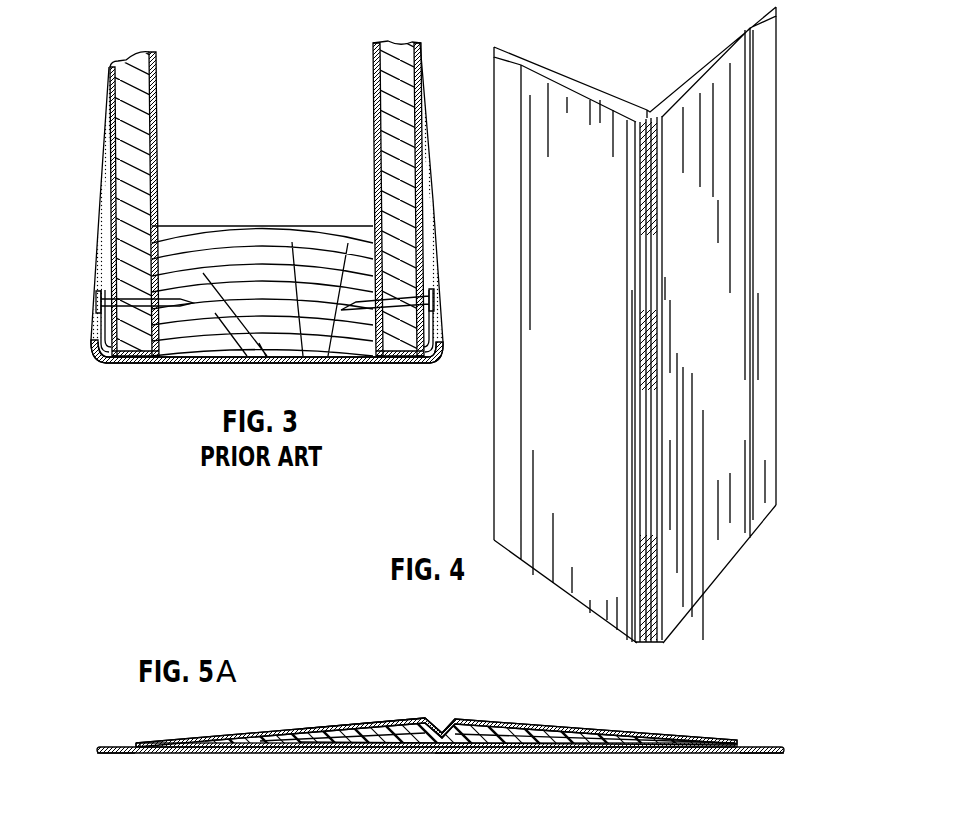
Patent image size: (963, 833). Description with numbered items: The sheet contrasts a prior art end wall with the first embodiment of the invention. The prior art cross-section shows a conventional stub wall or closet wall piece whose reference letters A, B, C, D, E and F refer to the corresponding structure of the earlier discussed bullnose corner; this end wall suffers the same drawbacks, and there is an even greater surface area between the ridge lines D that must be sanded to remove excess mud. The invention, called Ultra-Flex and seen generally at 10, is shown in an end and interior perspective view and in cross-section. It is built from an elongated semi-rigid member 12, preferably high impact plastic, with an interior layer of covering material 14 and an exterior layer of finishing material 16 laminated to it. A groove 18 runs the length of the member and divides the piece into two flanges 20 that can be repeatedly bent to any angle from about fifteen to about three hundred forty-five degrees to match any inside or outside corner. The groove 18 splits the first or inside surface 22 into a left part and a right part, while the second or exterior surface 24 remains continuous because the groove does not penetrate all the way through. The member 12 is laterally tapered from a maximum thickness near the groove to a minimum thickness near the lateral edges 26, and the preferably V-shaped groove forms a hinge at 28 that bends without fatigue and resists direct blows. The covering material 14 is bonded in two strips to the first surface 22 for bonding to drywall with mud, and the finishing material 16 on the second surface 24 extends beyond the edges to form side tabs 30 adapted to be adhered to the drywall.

In FIG. 3, the prior art structure A is at (122, 77).
In FIG. 3, the prior art structure B is at (403, 73).
In FIG. 3, the prior art structure C is at (208, 366).
In FIG. 3, the ridge lines D is at (88, 344).
In FIG. 3, the prior art structure E is at (97, 273).
In FIG. 3, the prior art structure F is at (102, 227).
In FIG. 4, the Ultra-Flex corner trim piece 10 is at (615, 341).
In FIG. 4, the elongated semi-rigid member 12 is at (678, 91).
In FIG. 5A, the elongated semi-rigid member 12 is at (508, 749).
In FIG. 4, the covering material 14 is at (584, 304).
In FIG. 5A, the covering material 14 is at (262, 736).
In FIG. 4, the finishing material 16 is at (580, 82).
In FIG. 5A, the finishing material 16 is at (314, 753).
In FIG. 4, the groove 18 is at (648, 645).
In FIG. 5A, the groove 18 is at (441, 730).
In FIG. 4, the flanges 20 is at (563, 584).
In FIG. 5A, the first or inside surface 22 is at (348, 720).
In FIG. 5A, the second or exterior surface 24 is at (388, 750).
In FIG. 5A, the lateral edges 26 is at (128, 754).
In FIG. 5A, the hinge 28 is at (449, 754).
In FIG. 4, the side tabs 30 is at (492, 510).
In FIG. 5A, the side tabs 30 is at (132, 746).